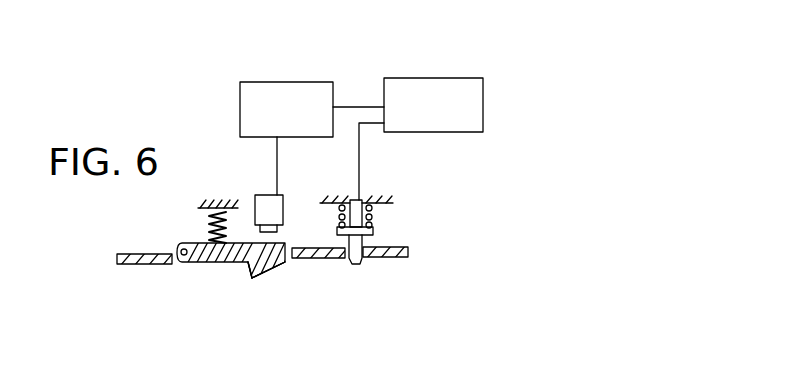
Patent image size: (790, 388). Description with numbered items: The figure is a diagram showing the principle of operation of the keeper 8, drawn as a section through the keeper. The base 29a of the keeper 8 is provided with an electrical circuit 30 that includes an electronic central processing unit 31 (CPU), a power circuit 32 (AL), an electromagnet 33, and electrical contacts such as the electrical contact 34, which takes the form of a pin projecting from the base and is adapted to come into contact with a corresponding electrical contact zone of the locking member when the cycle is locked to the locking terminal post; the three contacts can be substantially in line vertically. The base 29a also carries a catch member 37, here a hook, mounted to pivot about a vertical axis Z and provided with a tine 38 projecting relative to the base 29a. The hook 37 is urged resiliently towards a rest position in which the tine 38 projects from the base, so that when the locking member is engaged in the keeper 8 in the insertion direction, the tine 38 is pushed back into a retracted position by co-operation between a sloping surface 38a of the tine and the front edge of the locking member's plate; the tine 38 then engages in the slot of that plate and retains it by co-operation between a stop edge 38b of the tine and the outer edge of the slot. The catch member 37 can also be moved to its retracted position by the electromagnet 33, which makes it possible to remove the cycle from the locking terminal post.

The keeper 8 is at (482, 192).
The base 29a is at (132, 265).
The electrical circuit 30 is at (498, 72).
The electronic central processing unit 31 is at (310, 82).
The power circuit 32 is at (445, 78).
The electromagnet 33 is at (265, 205).
The electrical contact 34 is at (358, 263).
The catch member 37 is at (229, 262).
The tine 38 is at (262, 272).
The sloping surface 38a is at (272, 267).
The stop edge 38b is at (252, 263).
The vertical axis Z is at (186, 248).